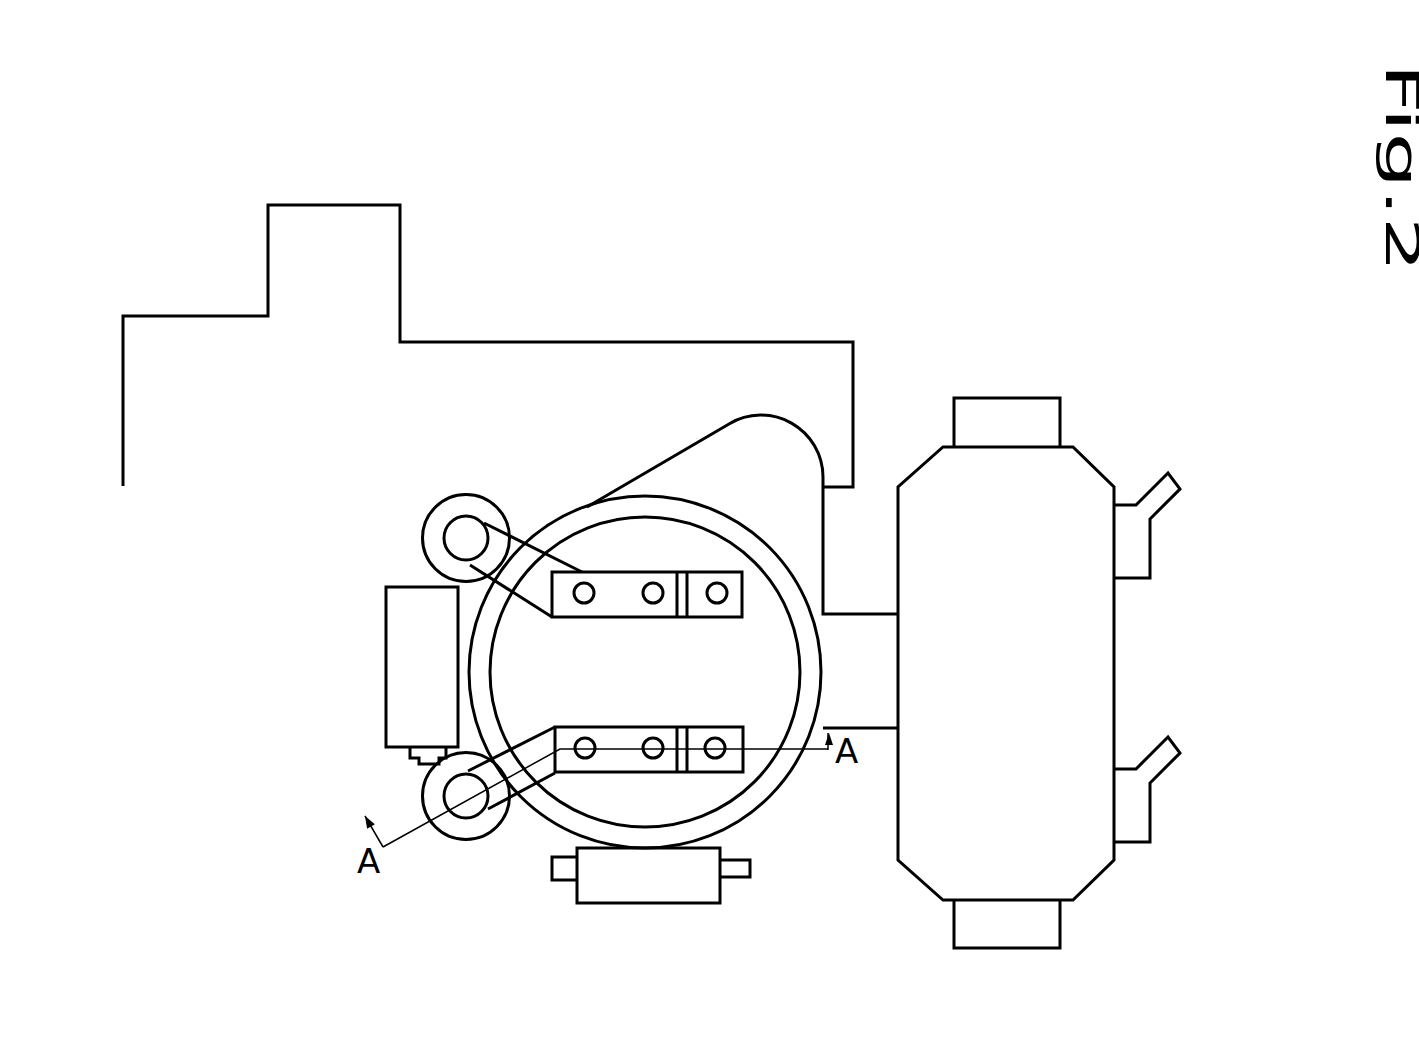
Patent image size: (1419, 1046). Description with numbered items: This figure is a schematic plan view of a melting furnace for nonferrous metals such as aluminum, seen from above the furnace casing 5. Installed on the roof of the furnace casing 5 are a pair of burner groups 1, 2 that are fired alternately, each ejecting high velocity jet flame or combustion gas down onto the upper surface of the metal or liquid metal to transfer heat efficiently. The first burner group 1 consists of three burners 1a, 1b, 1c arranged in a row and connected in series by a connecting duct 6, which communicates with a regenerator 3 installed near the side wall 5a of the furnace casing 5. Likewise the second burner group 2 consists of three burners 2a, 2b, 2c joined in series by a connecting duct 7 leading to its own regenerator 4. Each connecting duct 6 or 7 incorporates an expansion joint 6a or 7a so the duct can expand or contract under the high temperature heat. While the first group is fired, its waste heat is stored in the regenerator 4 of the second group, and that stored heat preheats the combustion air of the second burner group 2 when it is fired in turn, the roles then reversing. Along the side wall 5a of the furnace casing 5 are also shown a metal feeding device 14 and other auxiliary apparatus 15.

The burner group 1 is at (692, 701).
The burner 1a is at (652, 740).
The burner 1b is at (577, 740).
The burner 1c is at (723, 745).
The burner group 2 is at (648, 508).
The burner 2a is at (647, 583).
The burner 2b is at (577, 583).
The burner 2c is at (722, 587).
The regenerator 3 is at (461, 838).
The regenerator 4 is at (430, 535).
The furnace casing 5 is at (770, 810).
The side wall 5a is at (782, 778).
The connecting duct 6 is at (627, 765).
The expansion joint 6a is at (687, 772).
The connecting duct 7 is at (620, 587).
The expansion joint 7a is at (682, 580).
The metal feeding device 14 is at (418, 412).
The auxiliary apparatus 15 is at (443, 680).